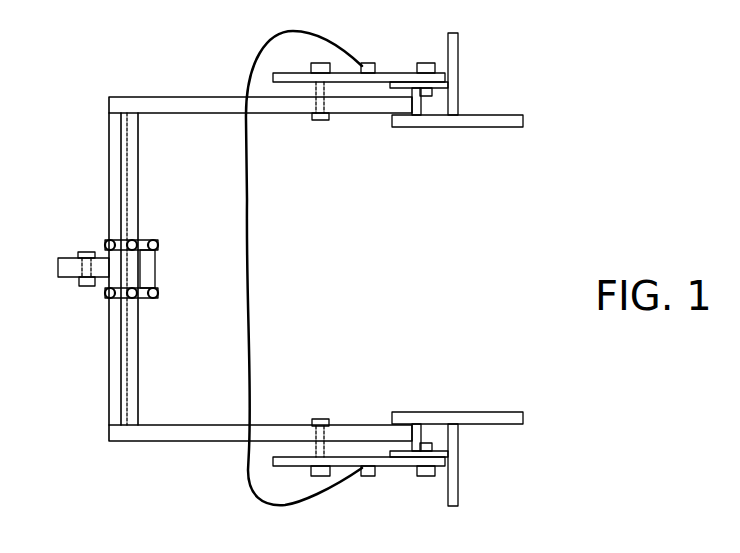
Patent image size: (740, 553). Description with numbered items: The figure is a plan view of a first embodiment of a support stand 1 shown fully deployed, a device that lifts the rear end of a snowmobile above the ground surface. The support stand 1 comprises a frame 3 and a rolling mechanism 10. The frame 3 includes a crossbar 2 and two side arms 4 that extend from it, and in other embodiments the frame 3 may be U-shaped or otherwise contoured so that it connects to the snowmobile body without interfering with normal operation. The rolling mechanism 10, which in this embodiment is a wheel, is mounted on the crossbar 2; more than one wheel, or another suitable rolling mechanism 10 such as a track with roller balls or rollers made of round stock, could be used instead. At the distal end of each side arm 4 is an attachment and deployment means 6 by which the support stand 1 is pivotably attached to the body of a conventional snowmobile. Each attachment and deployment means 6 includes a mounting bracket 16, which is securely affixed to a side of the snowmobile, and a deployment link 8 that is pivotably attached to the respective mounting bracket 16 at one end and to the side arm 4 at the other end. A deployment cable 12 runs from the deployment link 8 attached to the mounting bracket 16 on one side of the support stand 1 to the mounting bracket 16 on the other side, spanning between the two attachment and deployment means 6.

The support stand 1 is at (557, 163).
The crossbar 2 is at (108, 202).
The frame 3 is at (170, 104).
The side arm 4 is at (167, 432).
The attachment and deployment means 6 is at (513, 510).
The deployment link 8 is at (385, 462).
The rolling mechanism 10 is at (59, 270).
The deployment cable 12 is at (247, 268).
The mounting bracket 16 is at (503, 422).